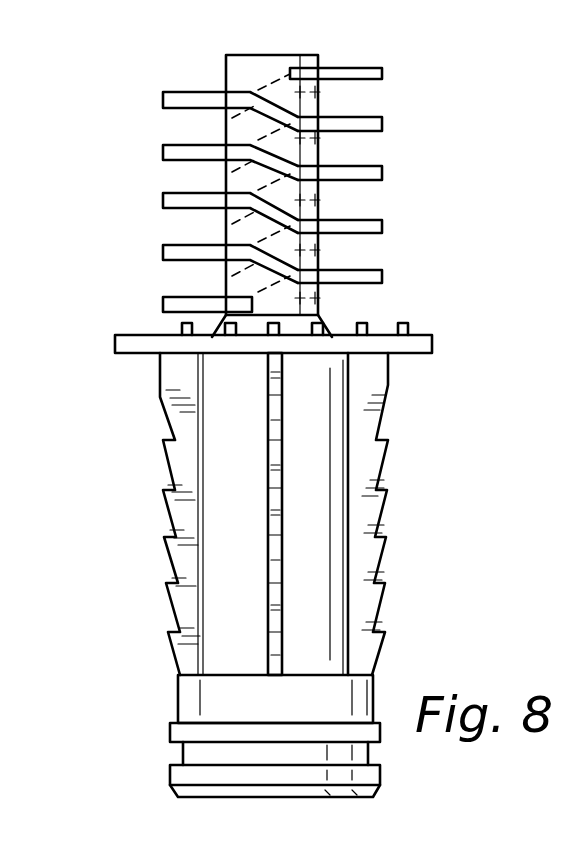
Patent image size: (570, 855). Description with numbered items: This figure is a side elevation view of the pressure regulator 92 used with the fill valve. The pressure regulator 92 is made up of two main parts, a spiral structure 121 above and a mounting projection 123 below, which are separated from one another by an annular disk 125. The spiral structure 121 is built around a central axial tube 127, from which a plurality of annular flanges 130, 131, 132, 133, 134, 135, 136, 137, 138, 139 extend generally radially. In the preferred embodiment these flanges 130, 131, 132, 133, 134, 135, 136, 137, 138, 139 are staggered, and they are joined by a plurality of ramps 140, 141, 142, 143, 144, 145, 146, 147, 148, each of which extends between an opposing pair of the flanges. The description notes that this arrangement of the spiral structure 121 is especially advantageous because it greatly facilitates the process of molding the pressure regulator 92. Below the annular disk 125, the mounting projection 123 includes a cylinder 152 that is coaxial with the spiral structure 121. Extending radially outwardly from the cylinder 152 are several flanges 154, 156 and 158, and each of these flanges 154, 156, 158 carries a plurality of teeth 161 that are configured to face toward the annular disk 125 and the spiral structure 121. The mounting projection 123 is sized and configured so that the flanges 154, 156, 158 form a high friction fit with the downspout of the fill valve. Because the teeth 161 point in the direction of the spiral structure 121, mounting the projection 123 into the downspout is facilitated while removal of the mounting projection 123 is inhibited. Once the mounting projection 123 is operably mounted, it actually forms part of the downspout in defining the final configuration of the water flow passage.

The pressure regulator 92 is at (416, 71).
The spiral structure 121 is at (410, 155).
The mounting projection 123 is at (325, 575).
The annular disk 125 is at (432, 336).
The axial tube 127 is at (226, 60).
The annular flange 130 is at (375, 68).
The annular flange 131 is at (163, 97).
The annular flange 132 is at (385, 118).
The annular flange 133 is at (163, 152).
The annular flange 134 is at (385, 168).
The annular flange 135 is at (163, 203).
The annular flange 136 is at (385, 226).
The annular flange 137 is at (163, 257).
The annular flange 138 is at (385, 277).
The annular flange 139 is at (163, 305).
The ramp 140 is at (328, 298).
The ramp 141 is at (226, 273).
The ramp 142 is at (328, 250).
The ramp 143 is at (226, 232).
The ramp 144 is at (328, 201).
The ramp 145 is at (226, 180).
The ramp 146 is at (328, 140).
The ramp 147 is at (226, 120).
The ramp 148 is at (325, 93).
The cylinder 152 is at (325, 408).
The flange 154 is at (180, 562).
The flange 156 is at (270, 480).
The flange 158 is at (372, 508).
The teeth 161 is at (385, 582).